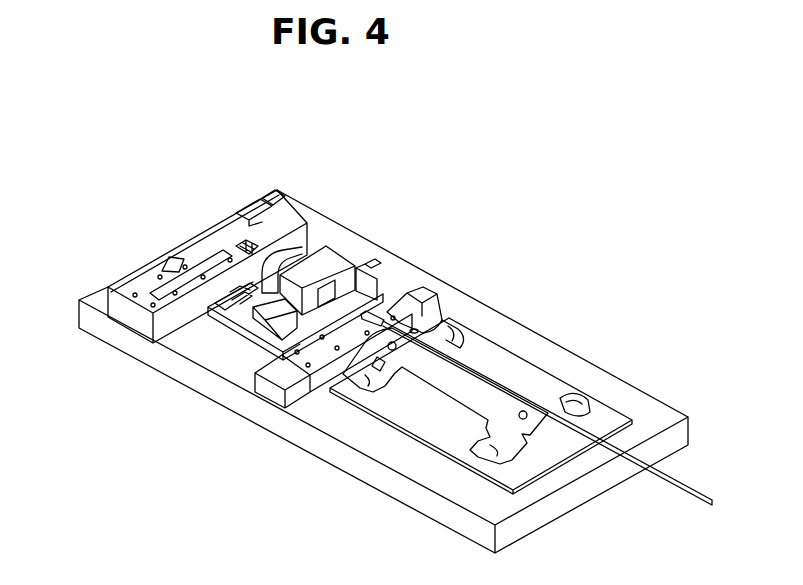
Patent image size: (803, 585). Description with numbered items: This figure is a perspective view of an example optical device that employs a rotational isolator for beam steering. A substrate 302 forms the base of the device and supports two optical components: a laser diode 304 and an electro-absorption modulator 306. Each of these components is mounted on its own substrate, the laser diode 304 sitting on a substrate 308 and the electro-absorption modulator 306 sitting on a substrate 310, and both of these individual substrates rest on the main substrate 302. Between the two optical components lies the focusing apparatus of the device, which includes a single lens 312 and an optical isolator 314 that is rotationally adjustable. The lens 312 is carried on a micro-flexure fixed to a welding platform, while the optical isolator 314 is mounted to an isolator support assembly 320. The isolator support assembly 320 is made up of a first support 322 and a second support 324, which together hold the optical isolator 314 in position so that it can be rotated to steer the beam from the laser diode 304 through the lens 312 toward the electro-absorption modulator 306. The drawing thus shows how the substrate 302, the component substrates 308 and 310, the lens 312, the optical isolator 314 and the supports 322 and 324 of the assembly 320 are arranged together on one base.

The substrate 302 is at (580, 368).
The laser diode 304 is at (243, 242).
The electro-absorption modulator 306 is at (443, 273).
The substrate 308 is at (138, 280).
The substrate 310 is at (280, 350).
The lens 312 is at (247, 250).
The optical isolator 314 is at (310, 253).
The isolator support assembly 320 is at (222, 318).
The first support 322 is at (382, 270).
The second support 324 is at (265, 322).